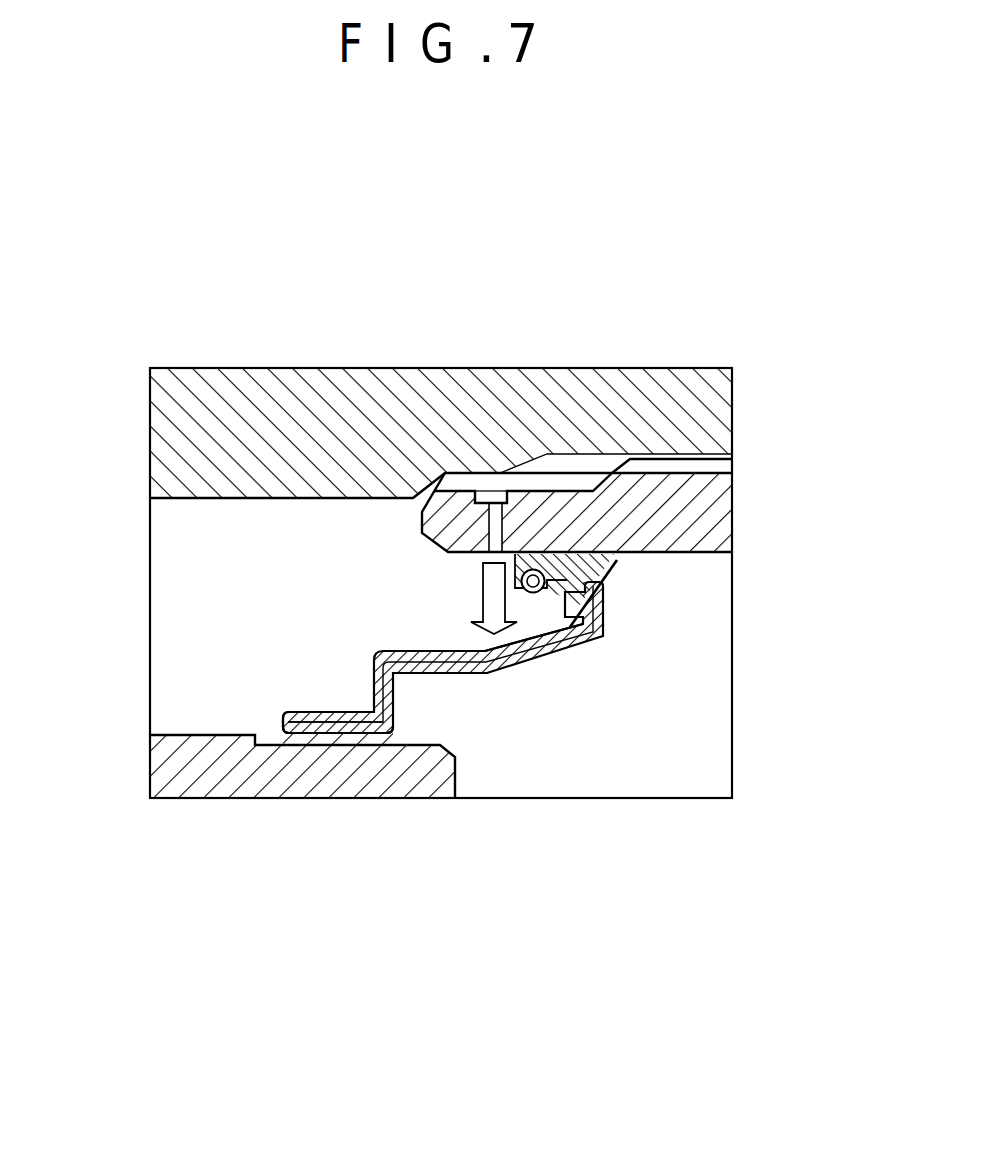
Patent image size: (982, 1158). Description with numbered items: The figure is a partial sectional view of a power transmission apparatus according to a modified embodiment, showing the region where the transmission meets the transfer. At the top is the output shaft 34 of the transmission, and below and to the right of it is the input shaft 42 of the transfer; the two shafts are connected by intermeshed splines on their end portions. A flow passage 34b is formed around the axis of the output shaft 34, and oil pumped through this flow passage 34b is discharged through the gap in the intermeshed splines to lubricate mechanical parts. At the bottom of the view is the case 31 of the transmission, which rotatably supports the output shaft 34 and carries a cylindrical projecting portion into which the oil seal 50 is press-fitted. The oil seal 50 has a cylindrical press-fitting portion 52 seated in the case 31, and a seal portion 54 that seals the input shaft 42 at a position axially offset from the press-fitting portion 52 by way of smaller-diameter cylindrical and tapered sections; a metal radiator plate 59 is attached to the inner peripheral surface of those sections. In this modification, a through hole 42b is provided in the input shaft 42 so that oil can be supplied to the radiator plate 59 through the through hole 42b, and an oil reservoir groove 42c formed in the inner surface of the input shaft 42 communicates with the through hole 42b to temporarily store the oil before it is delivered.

The case 31 is at (328, 775).
The output shaft 34 is at (170, 458).
The flow passage 34b is at (698, 468).
The input shaft 42 is at (707, 521).
The through hole 42b is at (477, 522).
The oil reservoir groove 42c is at (499, 500).
The oil seal 50 is at (548, 688).
The press-fitting portion 52 is at (372, 750).
The seal portion 54 is at (580, 573).
The radiator plate 59 is at (408, 649).